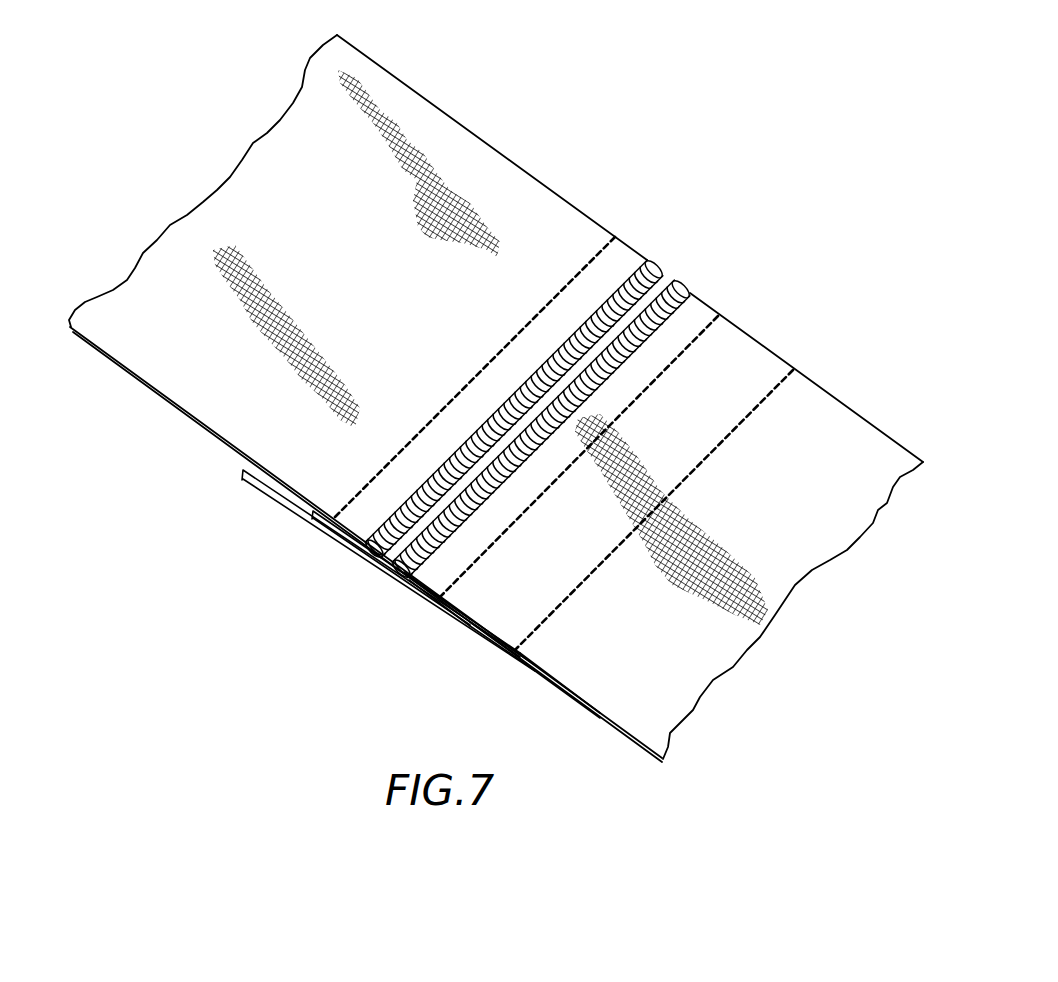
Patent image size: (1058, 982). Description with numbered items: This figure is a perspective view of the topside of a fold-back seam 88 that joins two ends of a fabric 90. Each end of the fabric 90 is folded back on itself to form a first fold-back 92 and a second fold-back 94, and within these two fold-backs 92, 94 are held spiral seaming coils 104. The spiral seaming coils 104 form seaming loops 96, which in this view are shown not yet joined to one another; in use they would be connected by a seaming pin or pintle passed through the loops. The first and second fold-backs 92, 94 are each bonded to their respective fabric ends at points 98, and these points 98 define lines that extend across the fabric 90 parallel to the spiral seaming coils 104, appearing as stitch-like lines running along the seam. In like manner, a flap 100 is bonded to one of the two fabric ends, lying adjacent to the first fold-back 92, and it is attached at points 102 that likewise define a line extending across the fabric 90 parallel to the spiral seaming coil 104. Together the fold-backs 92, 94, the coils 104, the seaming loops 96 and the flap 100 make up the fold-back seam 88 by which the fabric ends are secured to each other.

The fold-back seam 88 is at (738, 219).
The fabric 90 is at (507, 178).
The first fold-back 92 is at (449, 624).
The second fold-back 94 is at (315, 515).
The seaming loops 96 is at (397, 574).
The bonding points 98 is at (632, 221).
The flap 100 is at (258, 487).
The bonding points 102 is at (518, 653).
The spiral seaming coils 104 is at (657, 270).